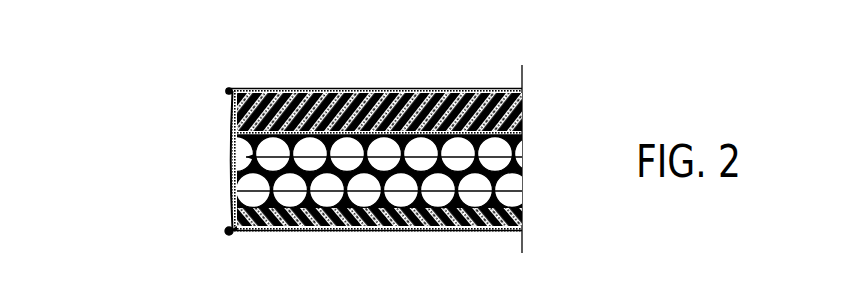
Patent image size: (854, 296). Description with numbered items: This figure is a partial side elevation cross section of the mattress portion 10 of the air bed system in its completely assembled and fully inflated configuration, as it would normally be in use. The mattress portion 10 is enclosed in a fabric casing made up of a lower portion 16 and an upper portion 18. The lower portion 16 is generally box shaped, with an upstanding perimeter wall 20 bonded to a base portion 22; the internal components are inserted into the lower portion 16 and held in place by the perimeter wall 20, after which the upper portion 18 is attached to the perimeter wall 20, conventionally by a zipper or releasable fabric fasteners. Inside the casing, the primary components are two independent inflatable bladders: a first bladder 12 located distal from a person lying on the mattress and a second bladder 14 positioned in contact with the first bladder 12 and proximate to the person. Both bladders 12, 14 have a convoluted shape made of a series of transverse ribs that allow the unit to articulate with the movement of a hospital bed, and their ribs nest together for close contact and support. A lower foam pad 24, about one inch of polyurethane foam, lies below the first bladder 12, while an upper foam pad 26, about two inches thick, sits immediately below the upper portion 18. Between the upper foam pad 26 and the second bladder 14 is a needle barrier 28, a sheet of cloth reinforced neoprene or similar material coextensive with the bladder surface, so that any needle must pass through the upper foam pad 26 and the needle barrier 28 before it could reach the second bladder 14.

The mattress portion 10 is at (195, 151).
The first inflatable bladder 12 is at (510, 178).
The second inflatable bladder 14 is at (515, 148).
The lower portion of casing 16 is at (226, 216).
The upper portion of casing 18 is at (466, 92).
The perimeter wall 20 is at (230, 181).
The base portion 22 is at (487, 230).
The lower foam pad 24 is at (523, 212).
The upper foam pad 26 is at (517, 117).
The needle barrier 28 is at (518, 135).